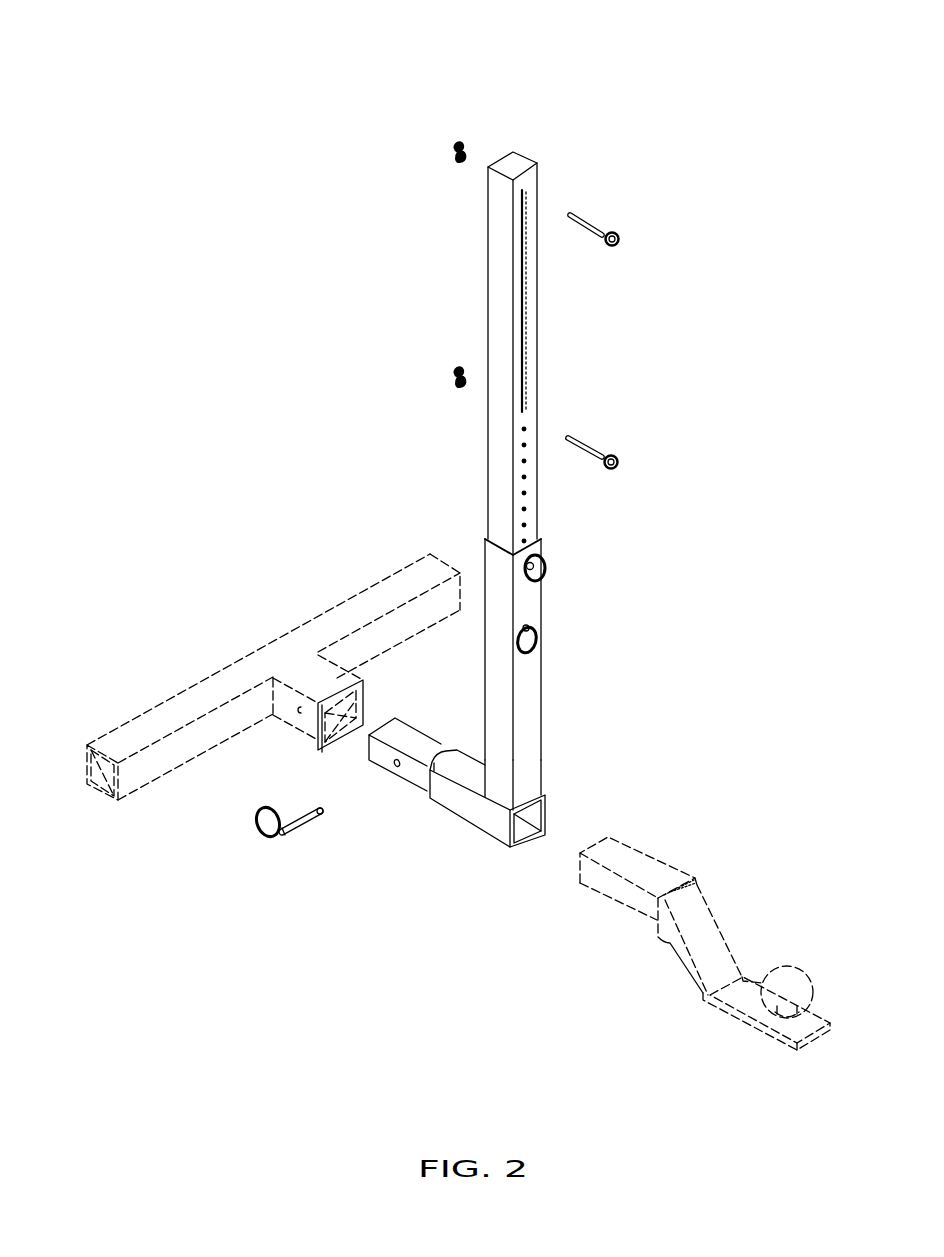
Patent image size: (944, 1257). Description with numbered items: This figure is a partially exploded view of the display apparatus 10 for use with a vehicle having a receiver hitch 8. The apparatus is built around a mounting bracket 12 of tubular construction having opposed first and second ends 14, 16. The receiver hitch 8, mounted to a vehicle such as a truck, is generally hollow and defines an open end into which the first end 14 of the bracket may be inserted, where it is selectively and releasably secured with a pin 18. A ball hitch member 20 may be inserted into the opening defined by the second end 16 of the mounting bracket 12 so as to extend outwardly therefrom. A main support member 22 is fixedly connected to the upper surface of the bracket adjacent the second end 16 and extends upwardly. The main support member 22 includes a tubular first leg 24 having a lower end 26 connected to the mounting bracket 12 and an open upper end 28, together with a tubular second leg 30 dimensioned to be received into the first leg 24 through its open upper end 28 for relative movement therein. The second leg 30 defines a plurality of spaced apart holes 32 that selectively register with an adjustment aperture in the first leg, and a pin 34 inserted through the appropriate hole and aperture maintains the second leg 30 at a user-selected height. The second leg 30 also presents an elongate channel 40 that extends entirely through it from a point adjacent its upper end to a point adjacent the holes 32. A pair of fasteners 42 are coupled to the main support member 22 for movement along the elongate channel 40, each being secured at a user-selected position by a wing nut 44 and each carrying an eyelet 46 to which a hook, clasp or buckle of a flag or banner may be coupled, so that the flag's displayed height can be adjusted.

The receiver hitch 8 is at (309, 663).
The display apparatus 10 is at (780, 72).
The mounting bracket 12 is at (457, 826).
The first end 14 is at (407, 785).
The second end 16 is at (508, 850).
The pin 18 is at (302, 829).
The ball hitch member 20 is at (772, 905).
The main support member 22 is at (575, 481).
The first leg 24 is at (527, 715).
The lower end 26 is at (532, 790).
The open upper end 28 is at (487, 542).
The second leg 30 is at (487, 277).
The holes 32 is at (527, 525).
The pin 34 is at (548, 567).
The elongate channel 40 is at (525, 312).
The fastener 42 is at (616, 201).
The wing nut 44 is at (455, 153).
The eyelet 46 is at (620, 238).